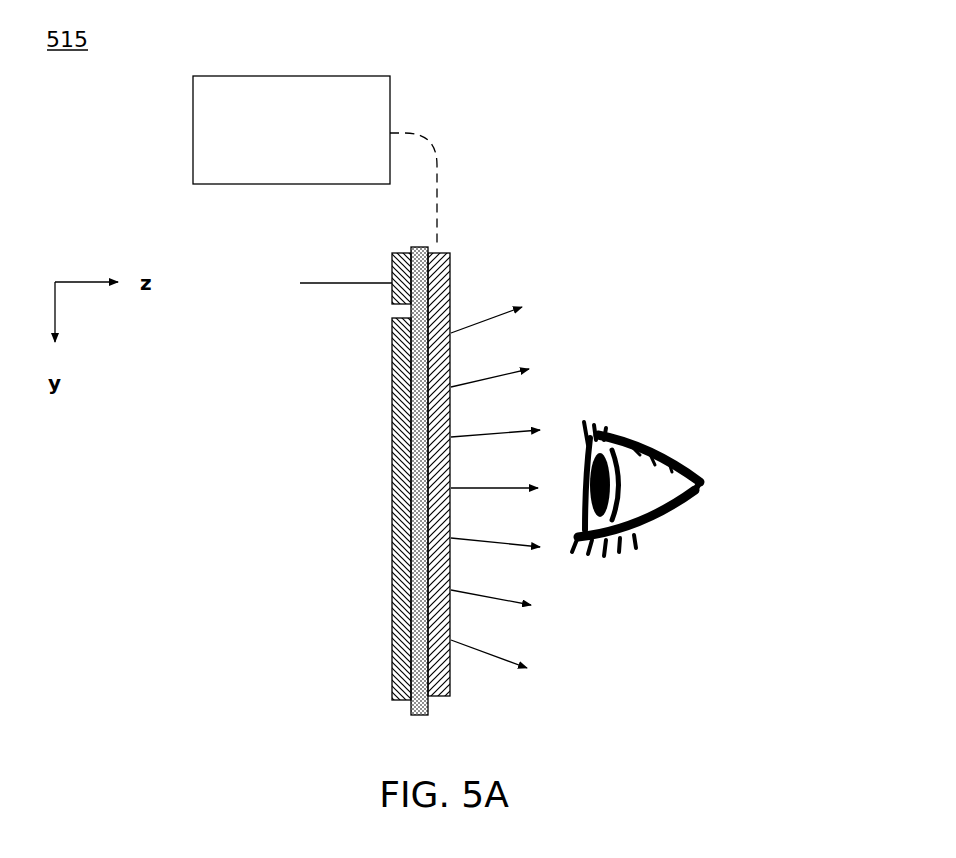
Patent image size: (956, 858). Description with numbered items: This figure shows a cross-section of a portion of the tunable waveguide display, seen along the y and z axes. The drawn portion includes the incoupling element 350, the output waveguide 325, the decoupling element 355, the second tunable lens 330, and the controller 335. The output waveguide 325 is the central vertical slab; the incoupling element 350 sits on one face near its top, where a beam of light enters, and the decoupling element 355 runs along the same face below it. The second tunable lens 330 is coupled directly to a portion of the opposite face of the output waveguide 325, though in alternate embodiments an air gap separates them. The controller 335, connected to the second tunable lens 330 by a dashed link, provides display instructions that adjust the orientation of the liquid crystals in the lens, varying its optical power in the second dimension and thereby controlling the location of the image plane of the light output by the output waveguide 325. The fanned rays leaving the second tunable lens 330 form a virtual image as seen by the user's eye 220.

The controller 335 is at (315, 161).
The output waveguide 325 is at (430, 713).
The incoupling element 350 is at (395, 253).
The decoupling element 355 is at (393, 512).
The second tunable lens 330 is at (445, 320).
The eye 220 is at (636, 517).